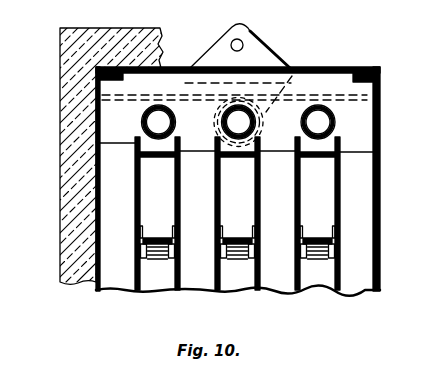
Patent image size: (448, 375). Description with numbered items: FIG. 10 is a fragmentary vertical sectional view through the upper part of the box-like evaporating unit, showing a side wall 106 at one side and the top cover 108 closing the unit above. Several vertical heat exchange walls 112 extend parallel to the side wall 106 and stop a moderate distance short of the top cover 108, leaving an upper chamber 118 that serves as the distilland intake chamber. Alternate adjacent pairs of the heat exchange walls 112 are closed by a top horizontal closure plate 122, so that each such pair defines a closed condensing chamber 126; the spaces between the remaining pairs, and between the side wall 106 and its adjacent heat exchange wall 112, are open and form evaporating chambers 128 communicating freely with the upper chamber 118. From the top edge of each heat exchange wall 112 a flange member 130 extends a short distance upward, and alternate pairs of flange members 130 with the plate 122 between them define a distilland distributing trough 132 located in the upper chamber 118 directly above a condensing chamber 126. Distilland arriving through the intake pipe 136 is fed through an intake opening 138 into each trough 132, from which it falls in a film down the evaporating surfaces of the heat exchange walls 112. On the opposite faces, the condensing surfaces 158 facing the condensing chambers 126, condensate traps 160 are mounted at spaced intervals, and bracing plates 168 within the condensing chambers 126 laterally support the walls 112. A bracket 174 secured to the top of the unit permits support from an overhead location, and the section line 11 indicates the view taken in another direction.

The section line 11- 11 is at (33, 138).
The side wall 106 is at (95, 291).
The top cover 108 is at (339, 68).
The heat exchange wall 112 is at (342, 186).
The upper chamber 118 is at (302, 112).
The top horizontal closure plate 122 is at (157, 158).
The condensing chamber 126 is at (157, 281).
The evaporating chamber 128 is at (103, 289).
The flange member 130 is at (137, 143).
The distilland distributing trough 132 is at (145, 137).
The intake pipe 136 is at (236, 60).
The intake opening 138 is at (161, 105).
The condensing surface 158 is at (143, 281).
The condensate trap 160 is at (340, 260).
The bracing plate 168 is at (155, 237).
The bracket 174 is at (250, 32).